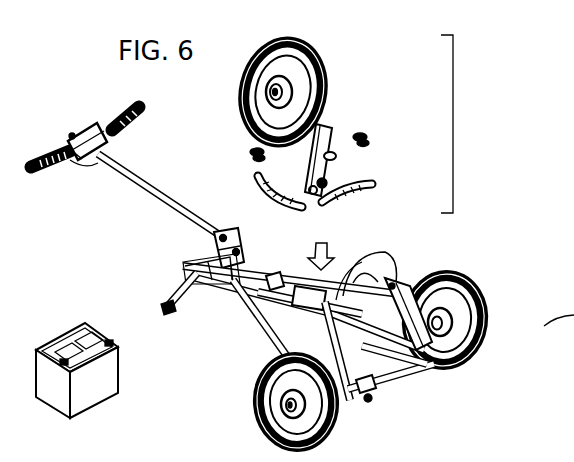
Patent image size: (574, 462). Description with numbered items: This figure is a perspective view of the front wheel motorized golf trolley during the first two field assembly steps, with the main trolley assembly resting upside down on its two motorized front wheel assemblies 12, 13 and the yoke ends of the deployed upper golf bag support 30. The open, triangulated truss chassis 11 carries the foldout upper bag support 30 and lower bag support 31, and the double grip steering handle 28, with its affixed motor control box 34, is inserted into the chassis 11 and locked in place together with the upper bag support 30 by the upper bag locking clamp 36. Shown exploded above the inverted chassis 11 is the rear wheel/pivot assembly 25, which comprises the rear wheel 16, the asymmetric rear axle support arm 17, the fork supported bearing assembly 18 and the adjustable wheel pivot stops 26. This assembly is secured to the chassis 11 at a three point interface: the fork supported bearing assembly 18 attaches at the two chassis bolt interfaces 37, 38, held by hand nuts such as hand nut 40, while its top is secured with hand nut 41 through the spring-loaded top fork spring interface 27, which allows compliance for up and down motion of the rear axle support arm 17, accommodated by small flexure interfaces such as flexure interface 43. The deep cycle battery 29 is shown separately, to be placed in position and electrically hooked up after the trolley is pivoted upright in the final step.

The chassis 11 is at (269, 336).
The front wheel assembly 12 is at (256, 405).
The front wheel assembly 13 is at (478, 288).
The rear wheel 16 is at (308, 54).
The asymmetric rear axle support arm 17 is at (334, 128).
The fork supported bearing assembly 18 is at (288, 207).
The rear wheel/pivot assembly 25 is at (453, 128).
The adjustable wheel pivot stops 26 is at (339, 184).
The top fork spring interface 27 is at (272, 282).
The steering handle 28 is at (157, 221).
The battery 29 is at (128, 378).
The upper golf bag support 30 is at (182, 296).
The lower golf bag support 31 is at (386, 403).
The control box 34 is at (82, 129).
The upper bag locking clamp 36 is at (212, 232).
The lower fork chassis interface 37 is at (353, 286).
The fork chassis interface 38 is at (373, 302).
The hand nut 40 is at (373, 141).
The hand nut 41 is at (247, 151).
The flexure interface 43 is at (376, 190).